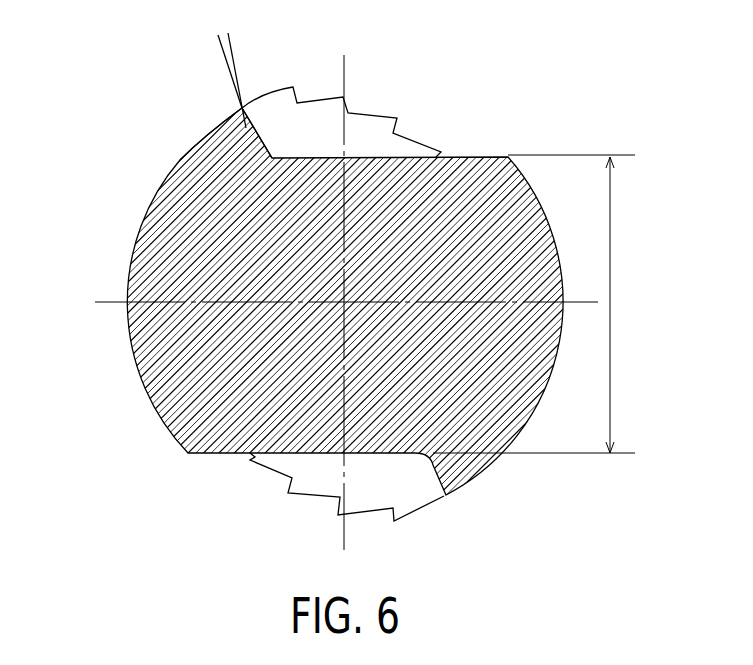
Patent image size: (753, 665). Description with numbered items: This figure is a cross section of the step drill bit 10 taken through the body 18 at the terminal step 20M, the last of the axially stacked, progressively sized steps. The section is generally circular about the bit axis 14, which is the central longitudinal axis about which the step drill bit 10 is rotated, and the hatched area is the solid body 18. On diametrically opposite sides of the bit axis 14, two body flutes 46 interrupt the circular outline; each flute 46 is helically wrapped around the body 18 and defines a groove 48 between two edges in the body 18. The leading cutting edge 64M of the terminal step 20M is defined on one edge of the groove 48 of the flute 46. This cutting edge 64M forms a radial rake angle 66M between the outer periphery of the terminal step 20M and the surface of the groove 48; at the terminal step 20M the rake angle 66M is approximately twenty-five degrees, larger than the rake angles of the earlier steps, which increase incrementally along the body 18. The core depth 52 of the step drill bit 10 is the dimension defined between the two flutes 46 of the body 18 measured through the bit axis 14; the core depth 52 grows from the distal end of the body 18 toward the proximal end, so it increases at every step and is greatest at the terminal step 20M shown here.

The step drill bit 10 is at (358, 295).
The bit axis 14 is at (345, 303).
The body 18 is at (138, 235).
The terminal step 20M is at (182, 162).
The body flutes 46 is at (322, 127).
The groove 48 is at (255, 136).
The core depth 52 is at (612, 248).
The cutting edge 64M is at (242, 108).
The rake angle 66M is at (226, 44).